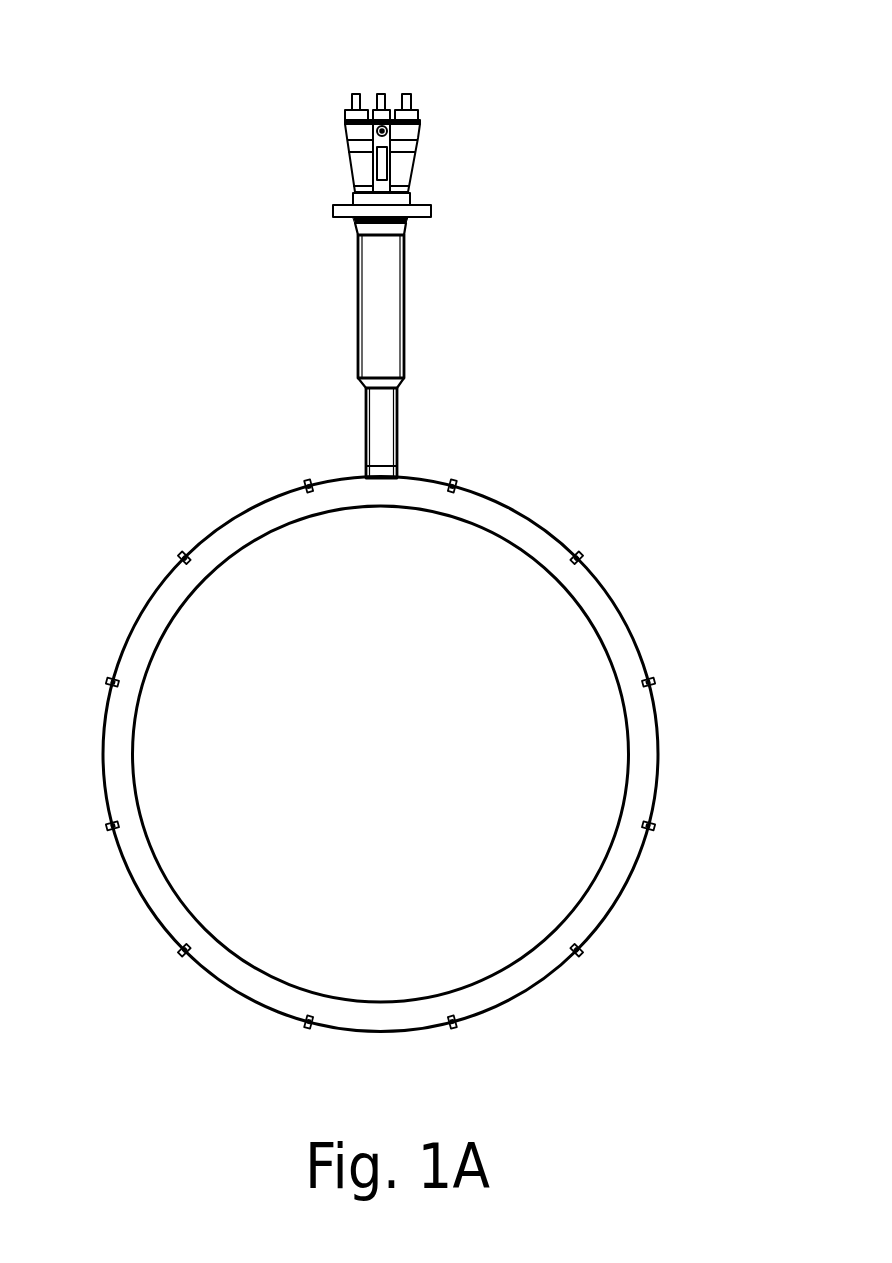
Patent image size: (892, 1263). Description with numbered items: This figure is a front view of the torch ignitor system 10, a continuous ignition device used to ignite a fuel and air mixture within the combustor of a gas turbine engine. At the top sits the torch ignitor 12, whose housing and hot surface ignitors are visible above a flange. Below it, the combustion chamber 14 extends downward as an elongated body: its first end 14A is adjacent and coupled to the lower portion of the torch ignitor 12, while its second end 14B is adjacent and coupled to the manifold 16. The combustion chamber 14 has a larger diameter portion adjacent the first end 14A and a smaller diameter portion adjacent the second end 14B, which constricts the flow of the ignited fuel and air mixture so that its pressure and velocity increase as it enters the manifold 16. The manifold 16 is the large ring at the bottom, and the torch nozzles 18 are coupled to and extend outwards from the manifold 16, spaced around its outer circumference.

The torch ignitor system 10 is at (620, 115).
The torch ignitor 12 is at (330, 156).
The combustion chamber 14 is at (422, 313).
The first end 14A is at (333, 258).
The second end 14B is at (343, 450).
The manifold 16 is at (632, 586).
The torch nozzles 18 is at (575, 948).